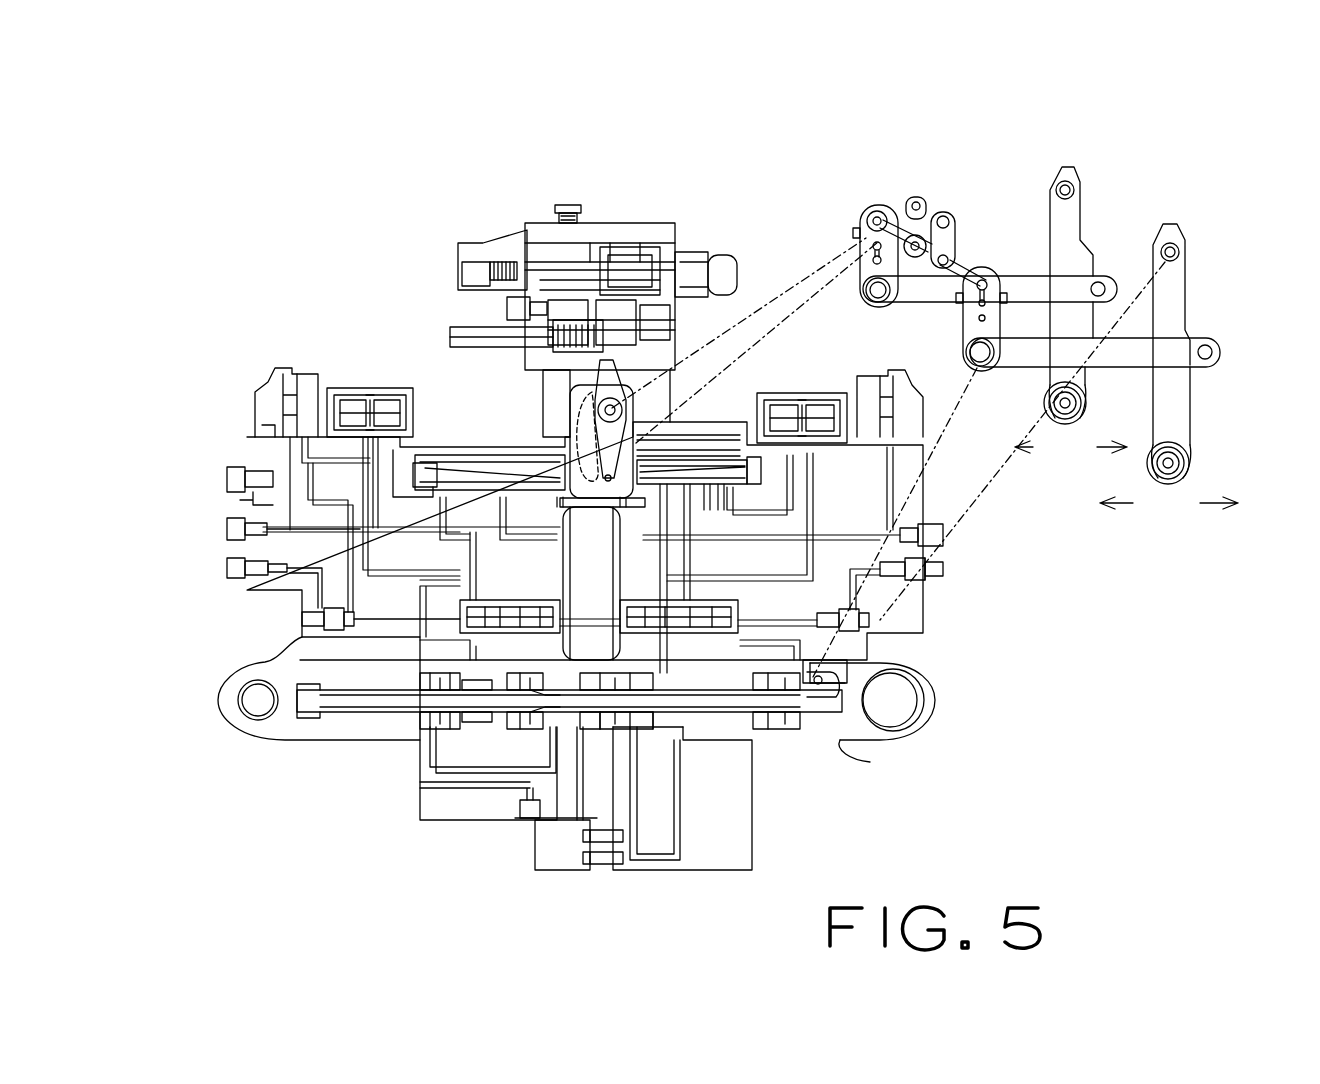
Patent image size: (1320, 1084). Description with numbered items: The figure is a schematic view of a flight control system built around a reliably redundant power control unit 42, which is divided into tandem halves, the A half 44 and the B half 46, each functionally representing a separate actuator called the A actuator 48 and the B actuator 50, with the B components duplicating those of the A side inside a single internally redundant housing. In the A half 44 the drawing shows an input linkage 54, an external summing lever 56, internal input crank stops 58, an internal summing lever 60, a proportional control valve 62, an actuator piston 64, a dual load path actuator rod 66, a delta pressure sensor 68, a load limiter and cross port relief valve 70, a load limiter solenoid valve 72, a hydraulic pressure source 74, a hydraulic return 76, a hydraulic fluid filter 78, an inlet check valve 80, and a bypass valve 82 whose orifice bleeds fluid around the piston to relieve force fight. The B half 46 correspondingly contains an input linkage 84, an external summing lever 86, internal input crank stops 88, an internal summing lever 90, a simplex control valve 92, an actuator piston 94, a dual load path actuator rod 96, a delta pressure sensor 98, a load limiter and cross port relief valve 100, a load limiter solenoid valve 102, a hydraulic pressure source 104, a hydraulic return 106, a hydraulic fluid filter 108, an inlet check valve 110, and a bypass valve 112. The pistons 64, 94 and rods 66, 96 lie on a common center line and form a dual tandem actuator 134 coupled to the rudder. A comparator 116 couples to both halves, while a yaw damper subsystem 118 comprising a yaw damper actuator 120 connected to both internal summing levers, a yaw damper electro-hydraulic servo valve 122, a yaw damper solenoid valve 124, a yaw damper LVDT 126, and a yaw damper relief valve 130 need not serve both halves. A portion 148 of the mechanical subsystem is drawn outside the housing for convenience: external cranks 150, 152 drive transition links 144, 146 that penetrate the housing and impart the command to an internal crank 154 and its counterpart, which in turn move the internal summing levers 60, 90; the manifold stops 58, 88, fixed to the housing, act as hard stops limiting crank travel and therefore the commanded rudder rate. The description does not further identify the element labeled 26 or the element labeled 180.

The steering assembly 26 is at (297, 206).
The reliably redundant power control unit 42 is at (202, 773).
The A half 44 is at (168, 742).
The B half 46 is at (988, 847).
The A actuator 48 is at (501, 765).
The B actuator 50 is at (694, 813).
The input linkage 54 is at (920, 352).
The external summing lever 56 is at (1071, 500).
The internal input crank stops 58 is at (868, 204).
The internal summing lever 60 is at (554, 233).
The proportional control valve 62 is at (414, 375).
The actuator piston 64 is at (517, 755).
The dual load path actuator rod 66 is at (382, 757).
The delta pressure sensor 68 is at (481, 841).
The load limiter and cross port relief valve 70 is at (314, 368).
The load limiter solenoid valve 72 is at (245, 402).
The hydraulic pressure source 74 is at (244, 579).
The hydraulic return 76 is at (260, 515).
The hydraulic fluid filter 78 is at (364, 606).
The inlet check valve 80 is at (284, 688).
The bypass valve 82 is at (329, 621).
The input linkage 84 is at (987, 348).
The external summing lever 86 is at (1178, 543).
The internal input crank stops 88 is at (964, 199).
The internal summing lever 90 is at (681, 333).
The simplex control valve 92 is at (717, 352).
The actuator piston 94 is at (734, 757).
The dual load path actuator rod 96 is at (700, 775).
The delta pressure sensor 98 is at (621, 869).
The load limiter and cross port relief valve 100 is at (802, 286).
The load limiter solenoid valve 102 is at (939, 460).
The hydraulic pressure source 104 is at (983, 640).
The hydraulic return 106 is at (956, 598).
The hydraulic fluid filter 108 is at (874, 615).
The inlet check valve 110 is at (905, 711).
The bypass valve 112 is at (885, 729).
The comparator 116 is at (555, 872).
The yaw damper subsystem 118 is at (540, 237).
The yaw damper actuator 120 is at (630, 231).
The yaw damper electro-hydraulic servo valve 122 is at (706, 231).
The yaw damper solenoid valve 124 is at (492, 211).
The yaw damper LVDT 126 is at (489, 296).
The yaw damper relief valve 130 is at (479, 292).
The dual tandem actuator 134 is at (591, 583).
The transition link 144 is at (896, 158).
The transition link 146 is at (1072, 273).
The portion of the mechanical subsystem 148 is at (1202, 331).
The external crank 150 is at (865, 312).
The external crank 152 is at (1107, 366).
The internal crank 154 is at (990, 199).
The pivot link 180 is at (920, 171).